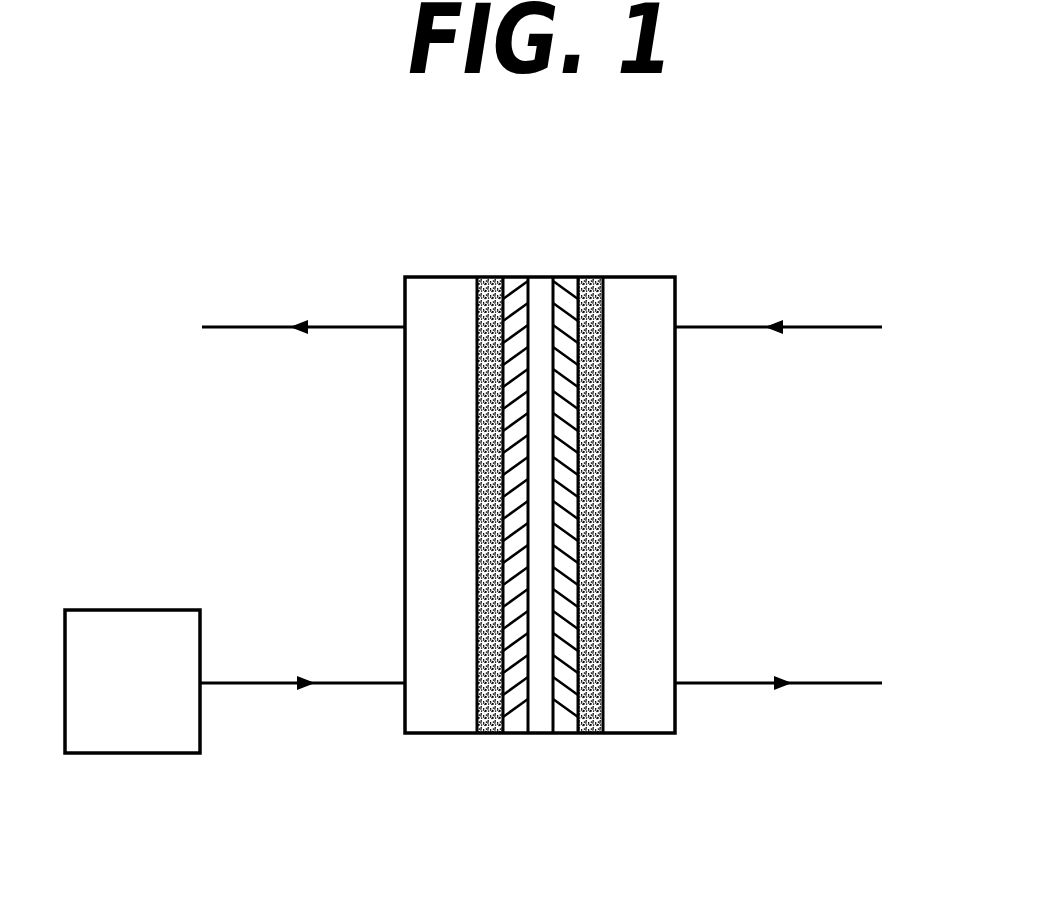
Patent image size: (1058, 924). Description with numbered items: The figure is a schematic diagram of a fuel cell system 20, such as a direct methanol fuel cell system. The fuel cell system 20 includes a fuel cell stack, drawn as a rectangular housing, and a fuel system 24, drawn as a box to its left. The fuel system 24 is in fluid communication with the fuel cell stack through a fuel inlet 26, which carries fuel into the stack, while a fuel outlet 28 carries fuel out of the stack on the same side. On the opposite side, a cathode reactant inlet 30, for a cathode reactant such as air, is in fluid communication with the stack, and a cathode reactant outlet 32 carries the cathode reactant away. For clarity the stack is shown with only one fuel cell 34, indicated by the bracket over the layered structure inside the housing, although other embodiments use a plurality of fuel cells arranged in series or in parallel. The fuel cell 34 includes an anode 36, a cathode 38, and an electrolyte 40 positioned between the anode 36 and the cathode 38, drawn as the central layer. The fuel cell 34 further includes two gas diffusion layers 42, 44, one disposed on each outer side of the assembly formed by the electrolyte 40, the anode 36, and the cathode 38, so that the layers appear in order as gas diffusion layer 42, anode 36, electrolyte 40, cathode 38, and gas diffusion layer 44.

The fuel cell system 20 is at (438, 277).
The fuel system 24 is at (106, 702).
The fuel inlet 26 is at (243, 685).
The fuel outlet 28 is at (248, 328).
The cathode reactant inlet 30 is at (835, 330).
The cathode reactant outlet 32 is at (842, 685).
The fuel cell 34 is at (477, 258).
The anode 36 is at (517, 722).
The cathode 38 is at (562, 722).
The electrolyte 40 is at (540, 722).
The gas diffusion layer 42 is at (488, 722).
The gas diffusion layer 44 is at (590, 722).